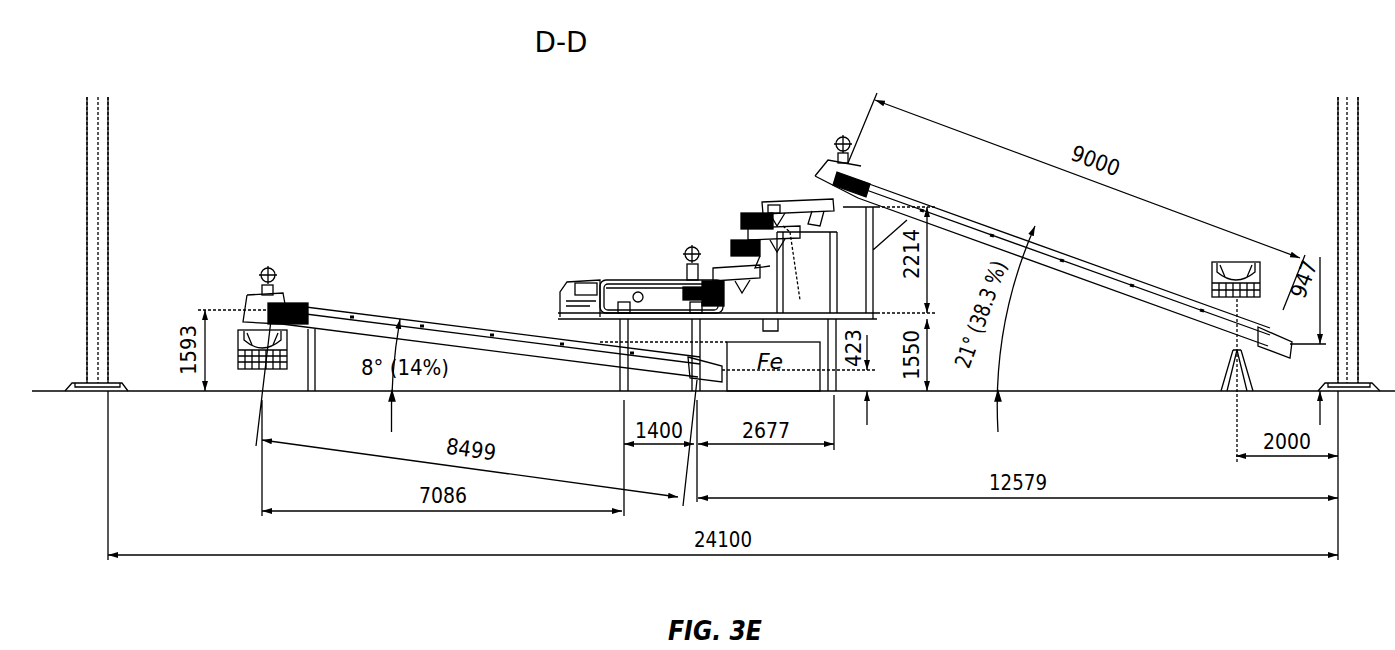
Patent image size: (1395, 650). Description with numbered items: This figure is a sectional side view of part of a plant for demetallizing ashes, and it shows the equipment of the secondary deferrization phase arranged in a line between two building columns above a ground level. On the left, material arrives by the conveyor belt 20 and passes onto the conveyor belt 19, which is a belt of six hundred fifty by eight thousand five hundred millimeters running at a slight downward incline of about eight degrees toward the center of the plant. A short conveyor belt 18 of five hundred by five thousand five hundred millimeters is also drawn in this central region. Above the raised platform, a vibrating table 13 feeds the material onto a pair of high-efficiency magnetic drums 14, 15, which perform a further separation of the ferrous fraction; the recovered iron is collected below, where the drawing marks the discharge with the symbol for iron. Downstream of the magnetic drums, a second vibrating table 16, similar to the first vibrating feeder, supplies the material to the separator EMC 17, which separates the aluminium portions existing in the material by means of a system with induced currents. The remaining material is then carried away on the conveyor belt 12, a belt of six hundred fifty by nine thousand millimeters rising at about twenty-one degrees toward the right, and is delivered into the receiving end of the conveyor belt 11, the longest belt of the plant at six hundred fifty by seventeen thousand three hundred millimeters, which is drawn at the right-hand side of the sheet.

The conveyor belt mm 650 × 17,300 11 is at (1230, 282).
The conveyor belt mm 650 × 9000 12 is at (1050, 250).
The vibrating table 13 is at (807, 208).
The magnetic drum 14 is at (752, 212).
The magnetic drum 15 is at (737, 242).
The vibrating table 16 is at (718, 267).
The separator EMC 17 is at (617, 289).
The conveyor belt mm 500 × 5500 18 is at (556, 317).
The conveyor belt mm 650 × 8,500 19 is at (490, 338).
The conveyor belt mm 650 × 12,000 20 is at (243, 330).